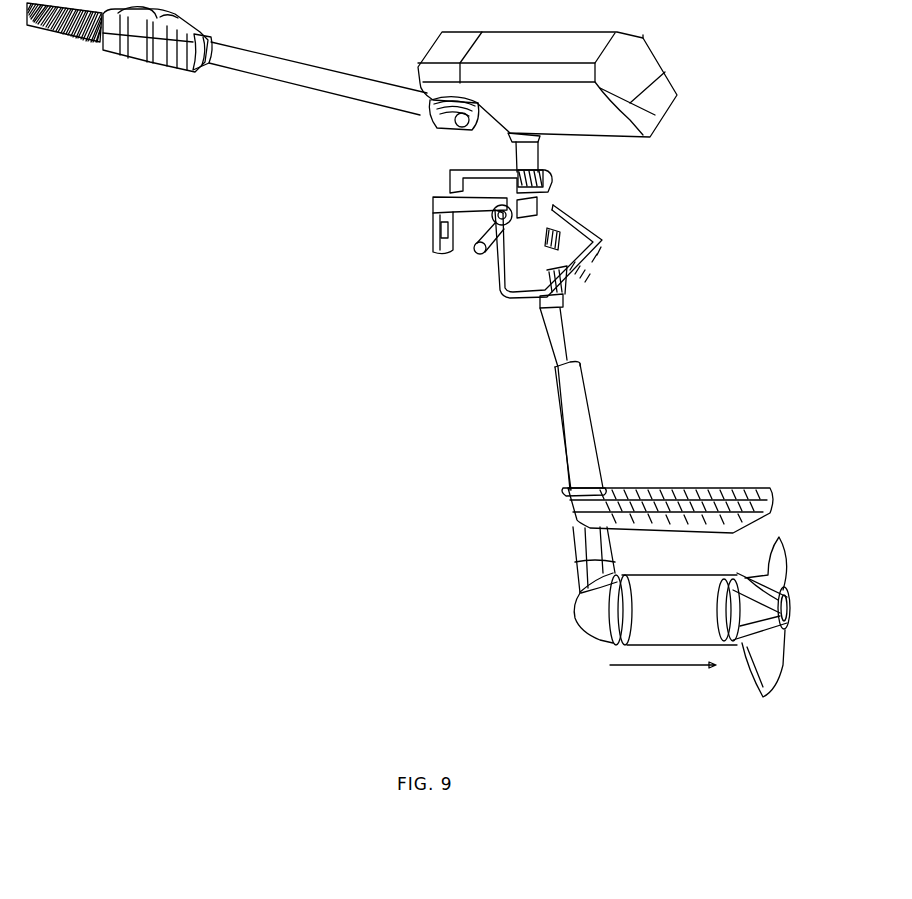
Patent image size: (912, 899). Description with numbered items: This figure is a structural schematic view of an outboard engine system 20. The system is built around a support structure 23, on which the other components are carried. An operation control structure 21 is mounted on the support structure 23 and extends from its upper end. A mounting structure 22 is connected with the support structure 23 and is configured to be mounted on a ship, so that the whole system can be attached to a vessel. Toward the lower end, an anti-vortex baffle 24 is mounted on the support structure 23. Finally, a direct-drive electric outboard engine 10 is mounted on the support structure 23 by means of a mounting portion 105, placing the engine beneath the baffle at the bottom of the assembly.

The outboard engine system 20 is at (727, 349).
The operation control structure 21 is at (253, 62).
The mounting structure 22 is at (452, 257).
The support structure 23 is at (573, 424).
The anti-vortex baffle 24 is at (743, 493).
The mounting portion 105 is at (577, 570).
The direct-drive electric outboard engine 10 is at (790, 601).